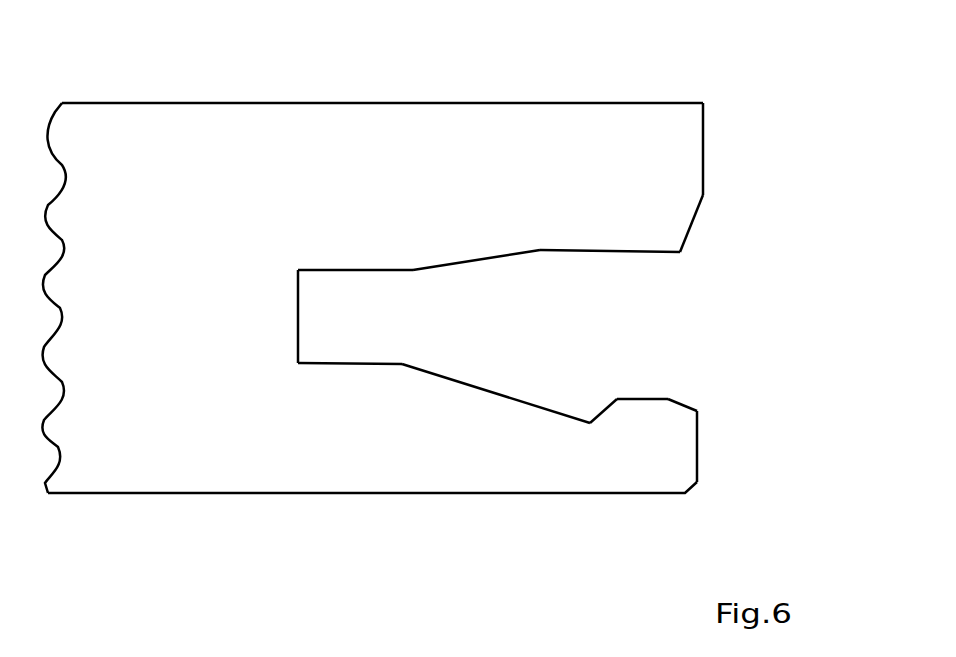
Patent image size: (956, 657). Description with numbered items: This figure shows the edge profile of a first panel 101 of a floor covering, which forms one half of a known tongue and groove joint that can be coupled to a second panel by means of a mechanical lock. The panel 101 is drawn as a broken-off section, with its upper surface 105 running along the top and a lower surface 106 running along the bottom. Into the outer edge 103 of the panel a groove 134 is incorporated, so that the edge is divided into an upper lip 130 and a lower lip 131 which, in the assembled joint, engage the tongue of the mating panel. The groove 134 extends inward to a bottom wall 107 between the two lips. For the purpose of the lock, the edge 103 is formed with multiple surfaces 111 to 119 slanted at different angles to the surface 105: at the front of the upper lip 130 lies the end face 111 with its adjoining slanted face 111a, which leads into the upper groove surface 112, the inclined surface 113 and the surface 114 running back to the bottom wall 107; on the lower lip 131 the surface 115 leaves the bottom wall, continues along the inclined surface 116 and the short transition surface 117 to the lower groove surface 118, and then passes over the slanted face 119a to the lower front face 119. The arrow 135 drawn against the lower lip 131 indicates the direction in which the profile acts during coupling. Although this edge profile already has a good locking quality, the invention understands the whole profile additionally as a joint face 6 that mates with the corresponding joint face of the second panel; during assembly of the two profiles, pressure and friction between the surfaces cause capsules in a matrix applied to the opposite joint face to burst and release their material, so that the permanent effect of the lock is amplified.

The joint face 6 is at (813, 163).
The first panel 101 is at (160, 142).
The outer edge 103 is at (737, 113).
The surface 105 is at (237, 104).
The lower surface 106 is at (185, 493).
The notch bottom wall 107 is at (296, 299).
The surface 111 is at (705, 155).
The chamfer of front end face 111a is at (690, 226).
The surface 112 is at (607, 252).
The surface 113 is at (484, 260).
The surface 114 is at (352, 273).
The surface 115 is at (358, 363).
The surface 116 is at (482, 387).
The surface 117 is at (604, 409).
The surface 118 is at (643, 397).
The surface 119 is at (700, 440).
The chamfer of lower front face 119a is at (690, 406).
The upper lip 130 is at (500, 187).
The lower lip 131 is at (493, 460).
The groove 134 is at (680, 323).
The clamping direction 135 is at (558, 413).